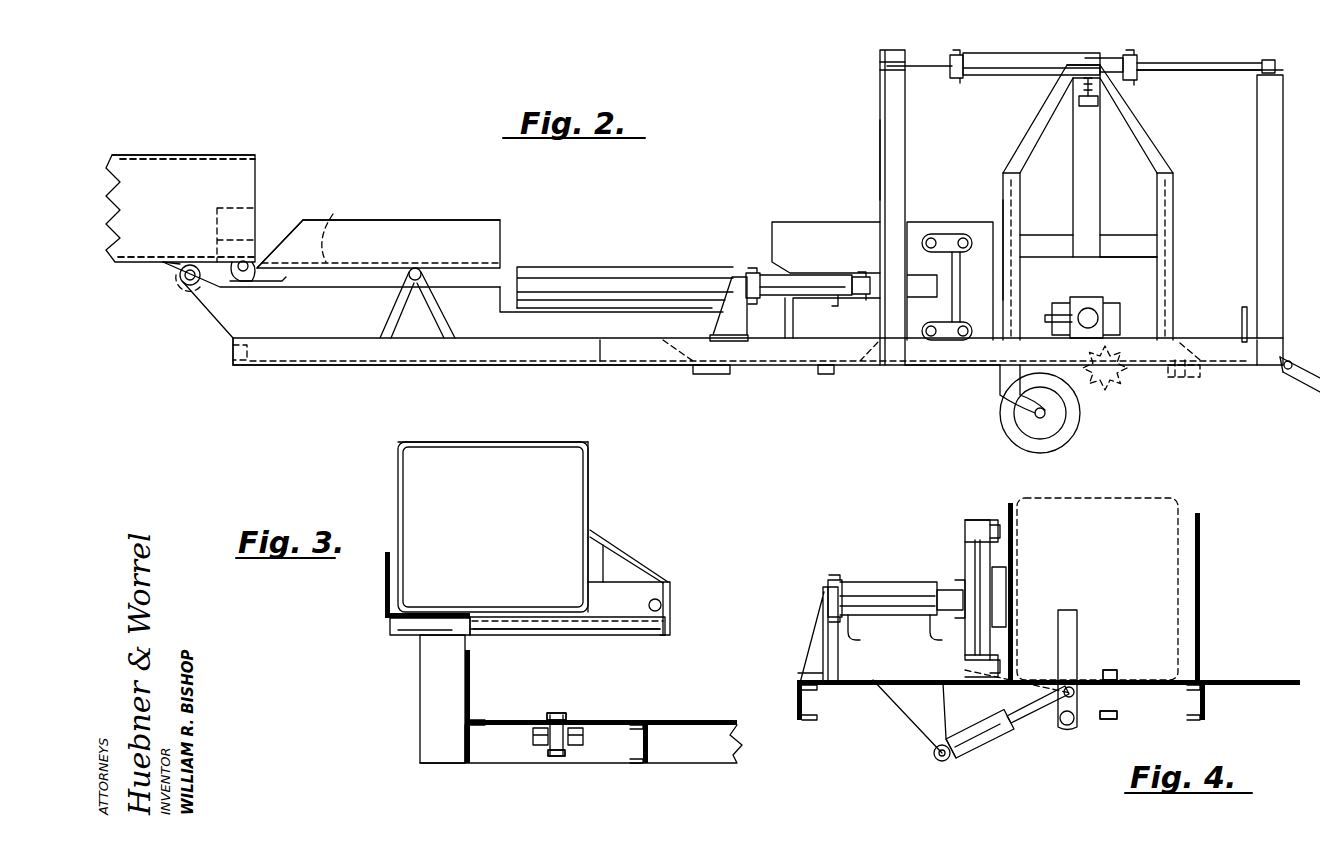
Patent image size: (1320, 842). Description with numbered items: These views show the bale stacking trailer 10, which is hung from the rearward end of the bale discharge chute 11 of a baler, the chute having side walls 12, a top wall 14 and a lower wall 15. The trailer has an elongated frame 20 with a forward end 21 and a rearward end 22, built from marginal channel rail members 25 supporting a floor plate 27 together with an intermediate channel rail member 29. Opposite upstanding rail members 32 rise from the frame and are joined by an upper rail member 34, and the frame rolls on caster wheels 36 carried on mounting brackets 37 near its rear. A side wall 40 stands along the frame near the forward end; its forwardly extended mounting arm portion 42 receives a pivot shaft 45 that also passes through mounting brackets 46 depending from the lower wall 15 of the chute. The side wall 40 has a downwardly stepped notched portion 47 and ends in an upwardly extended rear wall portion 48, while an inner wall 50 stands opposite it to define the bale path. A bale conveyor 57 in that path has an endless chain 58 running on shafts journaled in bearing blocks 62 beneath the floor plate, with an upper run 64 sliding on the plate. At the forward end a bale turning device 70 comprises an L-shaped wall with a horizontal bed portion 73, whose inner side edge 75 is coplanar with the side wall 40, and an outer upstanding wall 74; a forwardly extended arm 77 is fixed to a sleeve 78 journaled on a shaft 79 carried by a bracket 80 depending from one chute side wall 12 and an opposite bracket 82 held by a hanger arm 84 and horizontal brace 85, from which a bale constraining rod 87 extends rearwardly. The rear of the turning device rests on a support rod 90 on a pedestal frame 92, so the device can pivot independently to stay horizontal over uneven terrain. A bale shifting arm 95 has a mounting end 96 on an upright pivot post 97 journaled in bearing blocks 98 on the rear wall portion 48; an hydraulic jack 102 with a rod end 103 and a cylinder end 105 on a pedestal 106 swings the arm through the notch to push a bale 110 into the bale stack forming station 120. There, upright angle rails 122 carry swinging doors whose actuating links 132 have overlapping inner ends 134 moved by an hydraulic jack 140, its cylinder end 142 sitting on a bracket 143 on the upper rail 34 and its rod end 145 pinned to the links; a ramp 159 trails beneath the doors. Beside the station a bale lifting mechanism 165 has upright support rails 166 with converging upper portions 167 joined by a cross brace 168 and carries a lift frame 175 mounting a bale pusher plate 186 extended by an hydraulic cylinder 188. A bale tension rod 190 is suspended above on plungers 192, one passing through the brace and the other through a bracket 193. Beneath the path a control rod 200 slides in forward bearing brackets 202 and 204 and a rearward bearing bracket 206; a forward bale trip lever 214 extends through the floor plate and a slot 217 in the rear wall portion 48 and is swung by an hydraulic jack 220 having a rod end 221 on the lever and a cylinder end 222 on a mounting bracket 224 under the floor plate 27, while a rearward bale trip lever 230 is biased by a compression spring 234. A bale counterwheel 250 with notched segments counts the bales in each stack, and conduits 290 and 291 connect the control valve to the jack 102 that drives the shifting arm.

In FIG. 2, the bale stacking trailer 10 is at (368, 371).
In FIG. 2, the bale discharge chute 11 is at (151, 153).
In FIG. 3, the bale discharge chute 11 is at (598, 454).
In FIG. 2, the side walls 12 is at (184, 214).
In FIG. 3, the side walls 12 is at (397, 486).
In FIG. 2, the top wall 14 is at (196, 158).
In FIG. 3, the top wall 14 is at (520, 442).
In FIG. 2, the lower wall 15 is at (125, 268).
In FIG. 3, the lower wall 15 is at (516, 610).
In FIG. 2, the elongated frame 20 is at (522, 371).
In FIG. 2, the forward end 21 is at (231, 346).
In FIG. 2, the rearward end 22 is at (1258, 369).
In FIG. 2, the channel rail members 25 is at (230, 357).
In FIG. 3, the channel rail members 25 is at (465, 752).
In FIG. 4, the channel rail members 25 is at (797, 718).
In FIG. 3, the floor plate 27 is at (678, 720).
In FIG. 4, the floor plate 27 is at (1048, 668).
In FIG. 3, the intermediate channel rail member 29 is at (650, 763).
In FIG. 4, the intermediate channel rail member 29 is at (1207, 712).
In FIG. 2, the upstanding rail members 32 is at (880, 126).
In FIG. 2, the upper rail member 34 is at (880, 60).
In FIG. 2, the caster wheels 36 is at (1010, 428).
In FIG. 2, the mounting brackets 37 is at (1000, 383).
In FIG. 2, the side wall 40 is at (352, 327).
In FIG. 3, the side wall 40 is at (472, 696).
In FIG. 2, the mounting arm portion 42 is at (205, 303).
In FIG. 2, the pivot shaft 45 is at (186, 284).
In FIG. 2, the mounting brackets 46 is at (176, 268).
In FIG. 2, the notched portion 47 is at (548, 307).
In FIG. 2, the rear wall portion 48 is at (838, 232).
In FIG. 4, the rear wall portion 48 is at (1017, 623).
In FIG. 2, the inner wall 50 is at (1027, 240).
In FIG. 4, the inner wall 50 is at (1202, 562).
In FIG. 3, the bale conveyor 57 is at (570, 712).
In FIG. 4, the bale conveyor 57 is at (1118, 672).
In FIG. 3, the endless chain 58 is at (560, 757).
In FIG. 4, the endless chain 58 is at (1110, 720).
In FIG. 3, the bearing blocks 62 is at (536, 746).
In FIG. 3, the upper run 64 is at (554, 713).
In FIG. 4, the upper run 64 is at (1107, 671).
In FIG. 2, the bale turning device 70 is at (436, 219).
In FIG. 3, the bale turning device 70 is at (382, 556).
In FIG. 2, the bed portion 73 is at (338, 227).
In FIG. 3, the bed portion 73 is at (425, 615).
In FIG. 2, the outer upstanding wall 74 is at (372, 250).
In FIG. 3, the outer upstanding wall 74 is at (383, 581).
In FIG. 3, the inner side edge 75 is at (478, 615).
In FIG. 2, the forwardly extended arm 77 is at (276, 283).
In FIG. 3, the sleeve 78 is at (538, 637).
In FIG. 2, the shaft 79 is at (252, 263).
In FIG. 3, the shaft 79 is at (640, 638).
In FIG. 2, the hinge pin 80 is at (247, 283).
In FIG. 3, the bracket 82 is at (672, 600).
In FIG. 3, the hanger arm 84 is at (640, 560).
In FIG. 3, the horizontal brace 85 is at (605, 570).
In FIG. 3, the bale constraining rod 87 is at (662, 603).
In FIG. 2, the support rod 90 is at (421, 270).
In FIG. 3, the support rod 90 is at (395, 631).
In FIG. 2, the pedestal frame 92 is at (440, 318).
In FIG. 3, the pedestal frame 92 is at (428, 683).
In FIG. 2, the bale shifting arm 95 is at (655, 268).
In FIG. 4, the bale shifting arm 95 is at (1001, 567).
In FIG. 2, the mounting end 96 is at (925, 282).
In FIG. 2, the pivot post 97 is at (960, 275).
In FIG. 4, the pivot post 97 is at (975, 573).
In FIG. 2, the bearing blocks 98 is at (950, 236).
In FIG. 4, the bearing blocks 98 is at (975, 522).
In FIG. 2, the hydraulic jack 102 is at (795, 276).
In FIG. 4, the hydraulic jack 102 is at (915, 584).
In FIG. 2, the rod end 103 is at (862, 276).
In FIG. 4, the rod end 103 is at (950, 587).
In FIG. 2, the cylinder end 105 is at (770, 273).
In FIG. 4, the cylinder end 105 is at (850, 582).
In FIG. 2, the pedestal 106 is at (731, 323).
In FIG. 4, the pedestal 106 is at (817, 653).
In FIG. 4, the bale 110 is at (1135, 498).
In FIG. 2, the bale stack forming station 120 is at (975, 166).
In FIG. 2, the angle rails 122 is at (1266, 193).
In FIG. 2, the actuating links 132 is at (1192, 68).
In FIG. 2, the overlapping inner ends 134 is at (1137, 63).
In FIG. 2, the hydraulic jack 140 is at (1025, 54).
In FIG. 2, the cylinder end 142 is at (957, 55).
In FIG. 2, the bracket 143 is at (935, 63).
In FIG. 2, the rod end 145 is at (1133, 53).
In FIG. 2, the ramp 159 is at (1305, 368).
In FIG. 2, the bale lifting mechanism 165 is at (1116, 254).
In FIG. 2, the support rails 166 is at (1017, 286).
In FIG. 2, the converging upper portions 167 is at (1040, 122).
In FIG. 2, the cross brace 168 is at (1084, 64).
In FIG. 2, the lift frame 175 is at (1153, 266).
In FIG. 2, the bale pusher plate 186 is at (1057, 300).
In FIG. 2, the hydraulic cylinder 188 is at (1092, 316).
In FIG. 2, the bale tension rod 190 is at (1087, 107).
In FIG. 2, the plungers 192 is at (1080, 81).
In FIG. 2, the bracket 193 is at (1103, 63).
In FIG. 2, the pivot 200 is at (948, 370).
In FIG. 4, the pivot 200 is at (1074, 719).
In FIG. 2, the bearing bracket 202 is at (705, 376).
In FIG. 2, the bearing bracket 204 is at (830, 376).
In FIG. 2, the bearing bracket 206 is at (1284, 373).
In FIG. 2, the forward bale trip lever 214 is at (783, 325).
In FIG. 4, the forward bale trip lever 214 is at (1073, 626).
In FIG. 2, the slot 217 is at (795, 327).
In FIG. 4, the hydraulic jack 220 is at (993, 737).
In FIG. 4, the rod end 221 is at (1030, 712).
In FIG. 4, the cylinder end 222 is at (962, 757).
In FIG. 4, the mounting bracket 224 is at (927, 728).
In FIG. 2, the rearward bale trip lever 230 is at (1242, 318).
In FIG. 2, the compression spring 234 is at (1195, 379).
In FIG. 2, the bale counterwheel 250 is at (1115, 386).
In FIG. 4, the conduit 290 is at (928, 627).
In FIG. 4, the conduit 291 is at (855, 634).